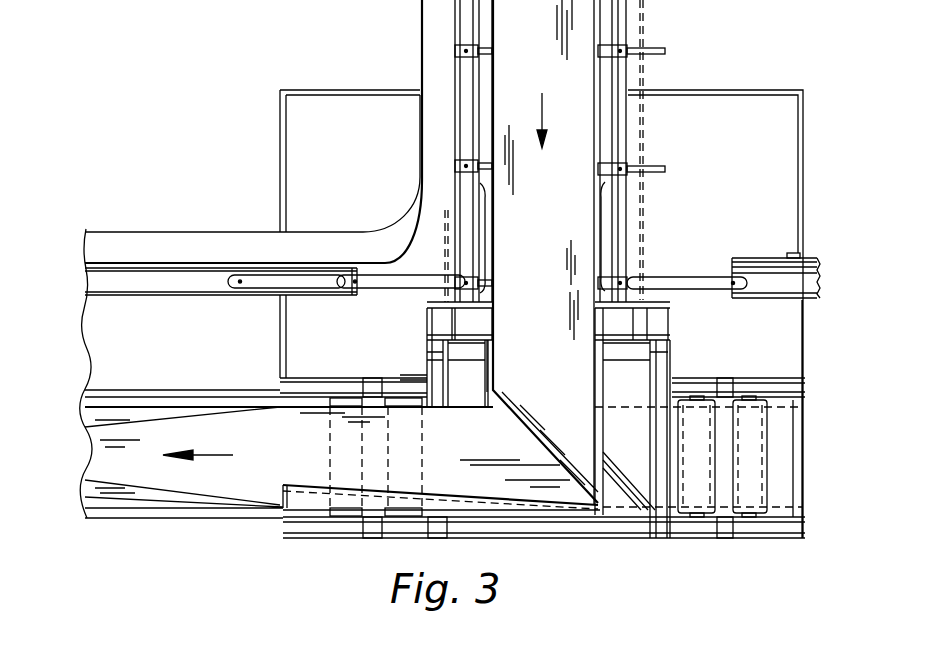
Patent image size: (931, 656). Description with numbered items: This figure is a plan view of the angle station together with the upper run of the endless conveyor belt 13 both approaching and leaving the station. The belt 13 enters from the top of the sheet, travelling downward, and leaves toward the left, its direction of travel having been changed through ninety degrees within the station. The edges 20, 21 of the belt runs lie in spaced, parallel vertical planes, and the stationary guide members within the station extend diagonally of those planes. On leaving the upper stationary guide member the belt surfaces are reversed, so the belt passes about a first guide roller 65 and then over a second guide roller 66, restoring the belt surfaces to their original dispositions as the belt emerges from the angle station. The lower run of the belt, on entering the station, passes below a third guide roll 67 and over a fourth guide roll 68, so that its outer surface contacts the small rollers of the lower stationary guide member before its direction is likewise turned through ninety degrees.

The endless conveyor belt 13 is at (566, 213).
The belt run edge 20 is at (138, 402).
The belt run edge 21 is at (142, 520).
The first guide roller 65 is at (755, 402).
The second guide roller 66 is at (698, 400).
The third guide roll 67 is at (332, 450).
The fourth guide roll 68 is at (417, 457).